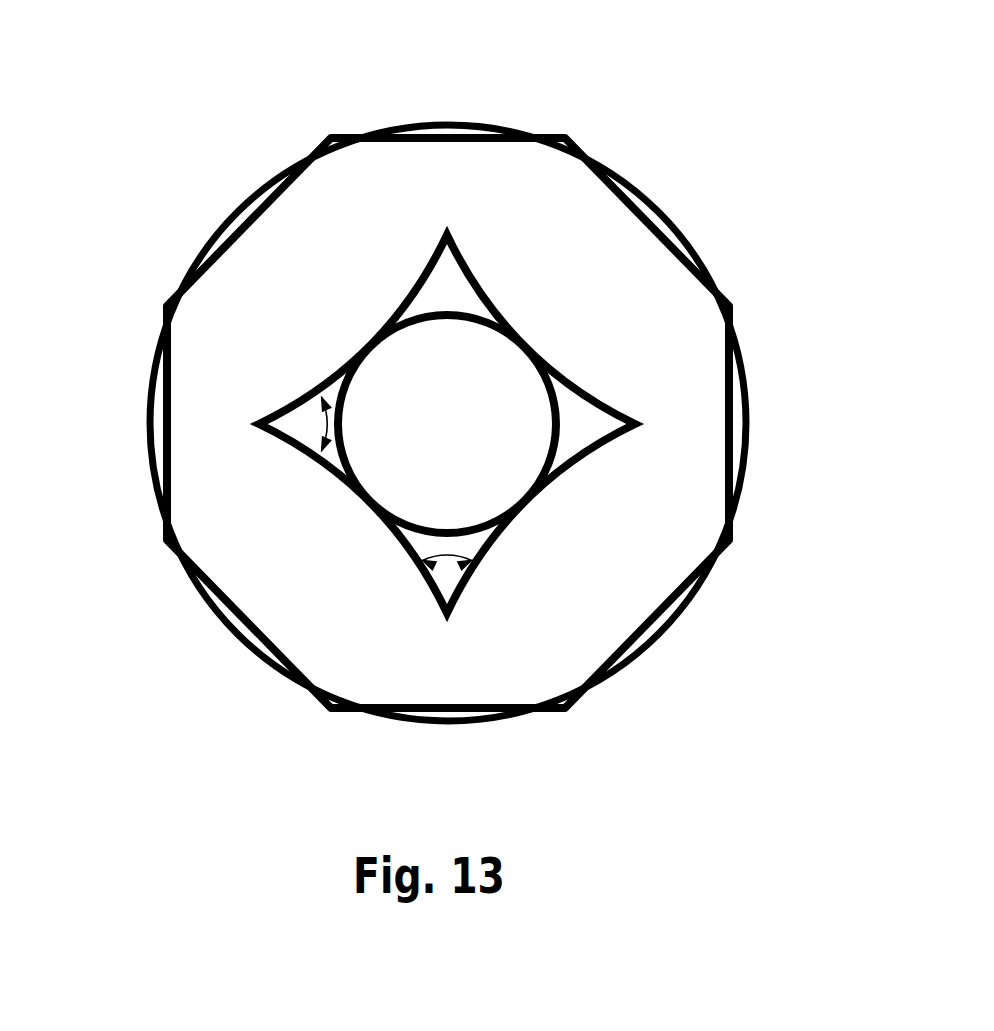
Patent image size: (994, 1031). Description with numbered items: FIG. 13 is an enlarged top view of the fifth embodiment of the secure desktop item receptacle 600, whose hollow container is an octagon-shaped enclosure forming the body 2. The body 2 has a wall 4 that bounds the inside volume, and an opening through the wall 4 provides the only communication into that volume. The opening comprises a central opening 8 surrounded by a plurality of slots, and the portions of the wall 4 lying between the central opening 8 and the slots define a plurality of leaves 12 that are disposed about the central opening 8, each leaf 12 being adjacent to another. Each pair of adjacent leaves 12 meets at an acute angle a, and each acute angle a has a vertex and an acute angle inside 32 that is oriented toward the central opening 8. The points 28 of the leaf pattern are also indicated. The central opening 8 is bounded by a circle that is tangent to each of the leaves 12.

The tool assembly 600 is at (396, 369).
The body 2 is at (625, 247).
The wall 4 is at (195, 477).
The central opening 8 is at (487, 390).
The leaves 12 is at (456, 453).
The tip 28 is at (636, 421).
The acute angle inside 32 is at (447, 570).
The acute angle a is at (341, 428).